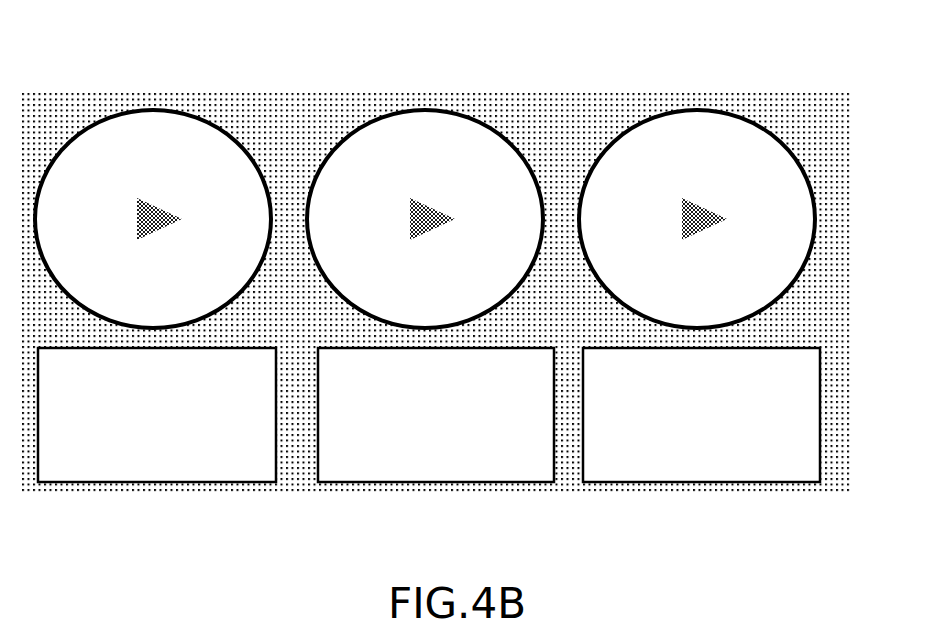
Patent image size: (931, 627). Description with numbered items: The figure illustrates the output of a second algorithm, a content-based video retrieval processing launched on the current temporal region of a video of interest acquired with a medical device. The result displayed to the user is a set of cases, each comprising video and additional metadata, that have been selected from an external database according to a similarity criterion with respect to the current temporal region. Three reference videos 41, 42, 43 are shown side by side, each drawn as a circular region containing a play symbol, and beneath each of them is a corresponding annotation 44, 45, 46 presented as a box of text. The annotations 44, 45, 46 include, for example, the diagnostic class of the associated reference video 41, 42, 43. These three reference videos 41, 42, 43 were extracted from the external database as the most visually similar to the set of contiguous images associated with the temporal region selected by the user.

The reference video 41 is at (53, 157).
The reference video 42 is at (417, 127).
The reference video 43 is at (765, 153).
The annotation 44 is at (144, 465).
The annotation 45 is at (445, 463).
The annotation 46 is at (713, 463).